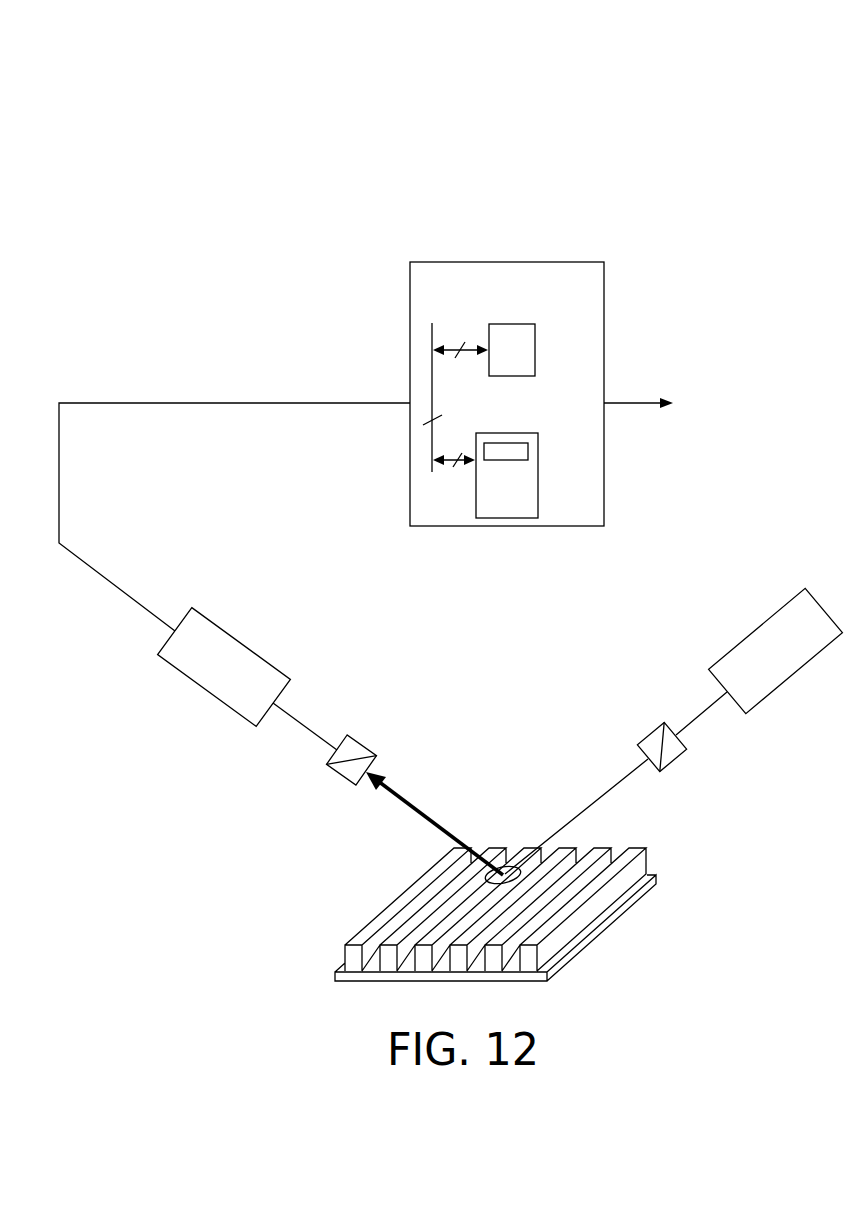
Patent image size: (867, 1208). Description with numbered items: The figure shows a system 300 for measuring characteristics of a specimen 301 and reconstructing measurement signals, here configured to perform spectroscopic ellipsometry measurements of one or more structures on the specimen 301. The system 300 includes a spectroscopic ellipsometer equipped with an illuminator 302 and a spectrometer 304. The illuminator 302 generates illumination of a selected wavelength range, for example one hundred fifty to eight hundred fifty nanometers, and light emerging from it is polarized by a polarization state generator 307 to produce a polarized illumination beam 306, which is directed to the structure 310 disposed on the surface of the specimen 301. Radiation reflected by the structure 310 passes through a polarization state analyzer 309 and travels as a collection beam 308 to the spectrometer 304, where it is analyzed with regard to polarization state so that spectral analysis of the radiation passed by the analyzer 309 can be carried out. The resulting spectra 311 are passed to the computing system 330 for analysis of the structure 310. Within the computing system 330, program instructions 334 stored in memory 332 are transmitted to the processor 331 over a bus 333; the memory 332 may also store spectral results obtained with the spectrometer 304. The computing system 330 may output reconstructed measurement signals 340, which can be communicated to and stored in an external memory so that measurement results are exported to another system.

The system 300 is at (51, 110).
The specimen 301 is at (650, 860).
The illuminator 302 is at (759, 661).
The spectrometer 304 is at (208, 676).
The polarized illumination beam 306 is at (630, 768).
The polarization state generator 307 is at (678, 762).
The collection beam 308 is at (398, 805).
The polarization state analyzer 309 is at (332, 777).
The structure 310 is at (486, 878).
The spectra 311 is at (295, 415).
The computing system 330 is at (493, 284).
The processor 331 is at (535, 348).
The memory 332 is at (476, 507).
The bus 333 is at (433, 395).
The program instructions 334 is at (528, 452).
The reconstructed measurement signals 340 is at (642, 407).